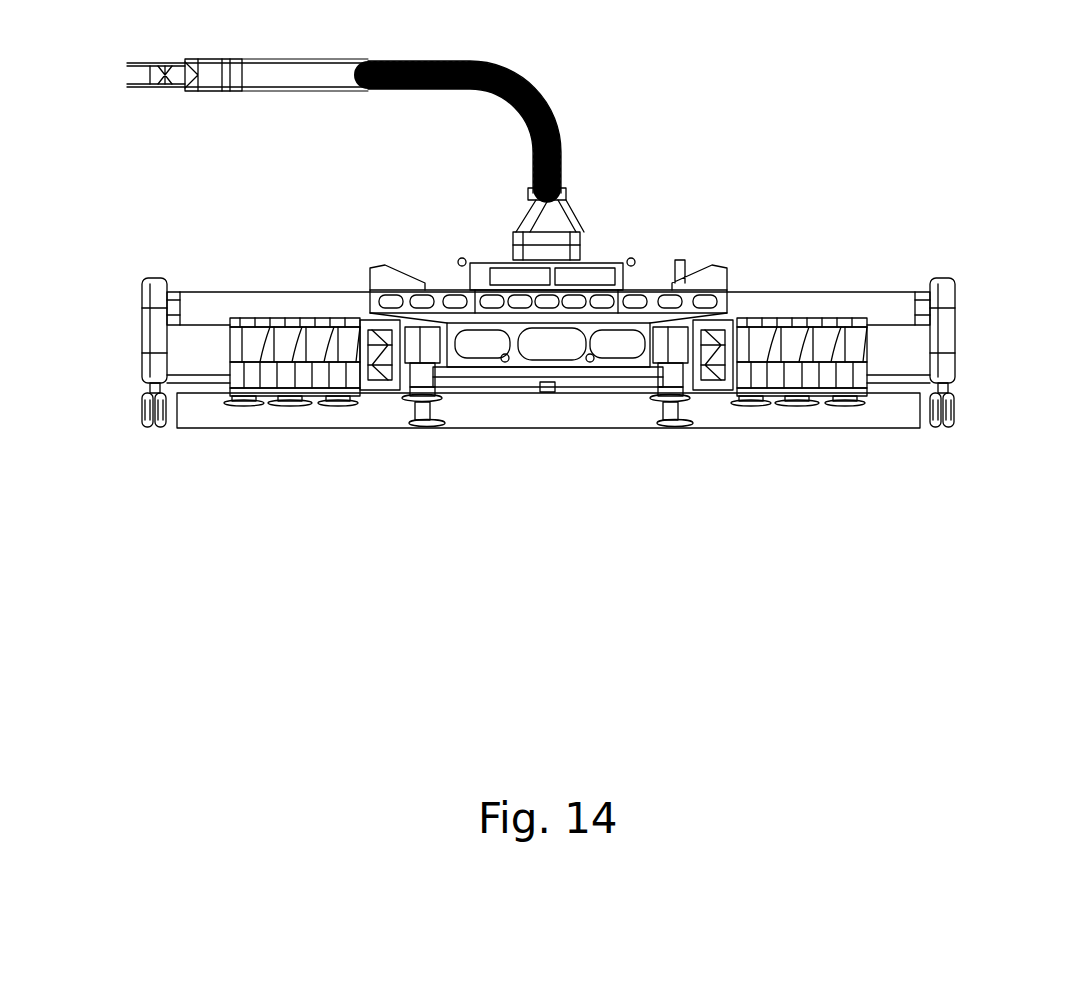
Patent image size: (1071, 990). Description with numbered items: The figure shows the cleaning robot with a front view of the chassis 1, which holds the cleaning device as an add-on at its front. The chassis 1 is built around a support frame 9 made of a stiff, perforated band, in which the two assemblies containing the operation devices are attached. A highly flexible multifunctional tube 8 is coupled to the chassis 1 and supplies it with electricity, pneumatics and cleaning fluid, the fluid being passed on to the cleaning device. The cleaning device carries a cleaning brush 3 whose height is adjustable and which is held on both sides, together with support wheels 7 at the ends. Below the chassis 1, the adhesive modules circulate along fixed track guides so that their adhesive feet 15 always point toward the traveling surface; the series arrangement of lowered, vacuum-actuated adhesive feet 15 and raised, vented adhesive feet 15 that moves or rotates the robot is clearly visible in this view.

The chassis 1 is at (541, 307).
The cleaning brush 3 is at (870, 410).
The support wheels 7 is at (928, 467).
The multifunctional tube 8 is at (517, 80).
The support frame 9 is at (598, 337).
The adhesive feet 15 is at (773, 470).